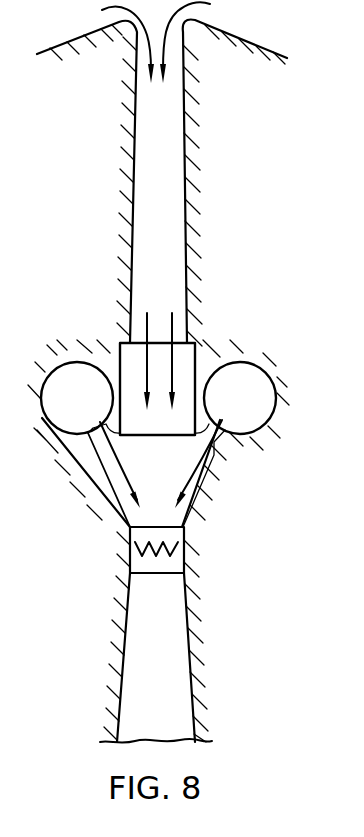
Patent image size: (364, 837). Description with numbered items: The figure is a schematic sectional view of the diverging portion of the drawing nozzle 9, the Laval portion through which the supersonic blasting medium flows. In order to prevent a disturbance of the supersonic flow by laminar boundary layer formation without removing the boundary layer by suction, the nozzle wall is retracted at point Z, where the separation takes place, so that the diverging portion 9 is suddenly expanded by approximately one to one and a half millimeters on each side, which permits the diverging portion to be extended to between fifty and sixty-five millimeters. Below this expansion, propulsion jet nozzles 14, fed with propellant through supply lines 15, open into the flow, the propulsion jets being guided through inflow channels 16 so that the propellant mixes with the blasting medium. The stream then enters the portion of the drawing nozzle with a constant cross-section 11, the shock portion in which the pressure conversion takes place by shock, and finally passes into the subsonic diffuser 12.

The diverging portion of the drawing nozzle 9 is at (175, 167).
The point of expansion Z is at (204, 323).
The supply line for the propellant 15 is at (257, 382).
The propulsion jet nozzle 14 is at (98, 435).
The inflow channel for the propulsion jets 16 is at (197, 470).
The portion of the drawing nozzle with a constant cross-section 11 is at (185, 527).
The subsonic diffuser 12 is at (168, 663).